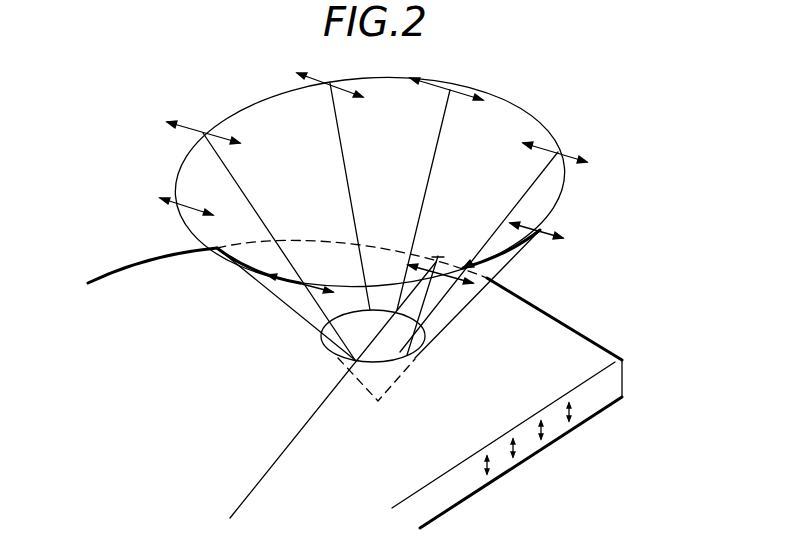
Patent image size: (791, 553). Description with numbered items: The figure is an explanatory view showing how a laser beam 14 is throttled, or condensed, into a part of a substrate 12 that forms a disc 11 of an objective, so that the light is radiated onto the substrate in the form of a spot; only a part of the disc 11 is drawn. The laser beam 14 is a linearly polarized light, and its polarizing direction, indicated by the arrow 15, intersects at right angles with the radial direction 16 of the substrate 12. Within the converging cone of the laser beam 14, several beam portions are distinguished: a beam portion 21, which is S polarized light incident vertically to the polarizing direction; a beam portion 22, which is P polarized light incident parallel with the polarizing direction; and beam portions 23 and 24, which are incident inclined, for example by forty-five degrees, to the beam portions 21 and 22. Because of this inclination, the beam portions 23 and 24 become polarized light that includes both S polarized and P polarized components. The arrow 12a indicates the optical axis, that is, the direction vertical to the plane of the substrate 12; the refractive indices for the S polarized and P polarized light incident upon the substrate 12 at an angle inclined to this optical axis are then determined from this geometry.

The disc 11 is at (119, 301).
The substrate 12 is at (613, 385).
The arrow indicating the optical axis 12a is at (485, 458).
The laser beam 14 is at (528, 113).
The arrow indicating the polarizing direction 15 is at (188, 125).
The radial direction 16 is at (287, 447).
The beam portion (S polarized light) 21 is at (440, 142).
The beam portion (P polarized light) 22 is at (235, 177).
The inclined beam portion 23 is at (343, 133).
The inclined beam portion 24 is at (532, 188).